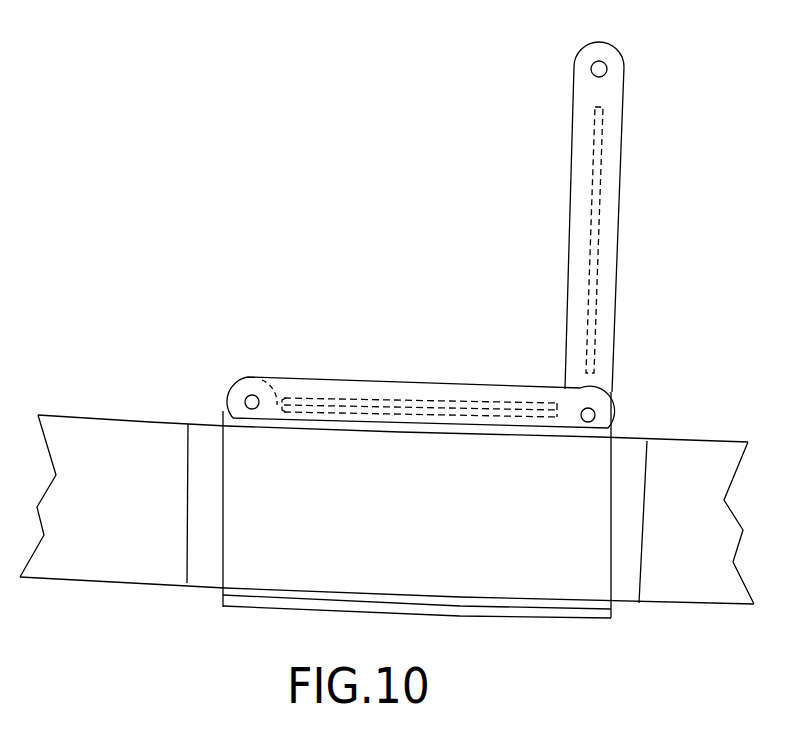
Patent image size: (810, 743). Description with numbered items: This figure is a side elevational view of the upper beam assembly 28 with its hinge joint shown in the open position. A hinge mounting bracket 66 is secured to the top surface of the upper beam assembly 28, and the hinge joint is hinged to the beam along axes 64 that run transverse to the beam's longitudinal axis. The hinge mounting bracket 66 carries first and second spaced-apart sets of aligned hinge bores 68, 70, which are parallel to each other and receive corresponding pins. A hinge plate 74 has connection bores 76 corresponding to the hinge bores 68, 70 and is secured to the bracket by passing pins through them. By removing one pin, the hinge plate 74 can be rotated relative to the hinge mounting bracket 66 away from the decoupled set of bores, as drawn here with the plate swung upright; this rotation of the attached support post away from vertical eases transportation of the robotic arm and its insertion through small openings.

The upper beam assembly 28 is at (672, 440).
The axes 64 is at (585, 421).
The hinge mounting bracket 66 is at (485, 618).
The hinge bores 68 is at (613, 390).
The hinge bores 70 is at (250, 395).
The hinge plate 74 is at (618, 233).
The connection bores 76 is at (603, 62).